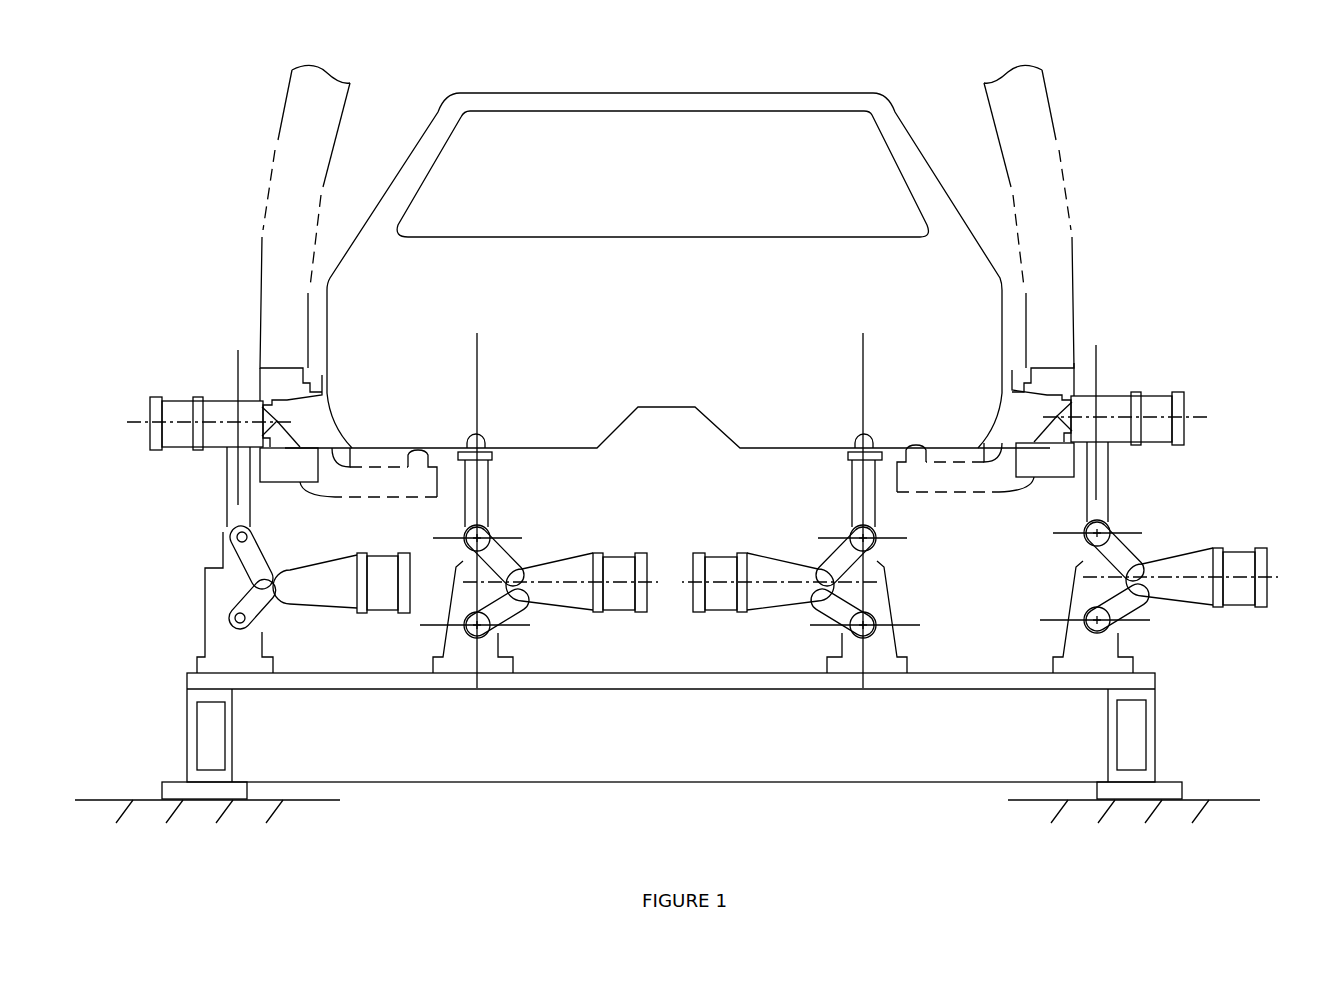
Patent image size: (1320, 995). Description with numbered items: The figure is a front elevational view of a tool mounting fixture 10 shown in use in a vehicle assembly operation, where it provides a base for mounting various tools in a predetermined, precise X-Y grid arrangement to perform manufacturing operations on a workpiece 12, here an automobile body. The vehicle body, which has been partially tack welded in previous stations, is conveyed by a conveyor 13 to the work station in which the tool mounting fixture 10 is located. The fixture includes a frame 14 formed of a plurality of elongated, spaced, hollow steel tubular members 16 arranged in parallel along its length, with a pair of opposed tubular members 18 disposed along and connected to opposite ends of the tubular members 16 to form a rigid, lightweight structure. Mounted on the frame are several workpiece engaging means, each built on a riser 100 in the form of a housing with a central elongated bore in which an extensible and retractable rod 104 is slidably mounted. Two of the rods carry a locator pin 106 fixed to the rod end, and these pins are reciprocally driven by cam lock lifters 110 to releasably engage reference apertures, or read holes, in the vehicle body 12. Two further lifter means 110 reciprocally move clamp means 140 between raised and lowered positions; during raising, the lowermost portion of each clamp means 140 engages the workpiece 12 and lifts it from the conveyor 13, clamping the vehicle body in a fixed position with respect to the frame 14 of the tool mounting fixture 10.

The tool mounting fixture 10 is at (678, 575).
The workpiece 12 is at (420, 268).
The conveyor 13 is at (305, 140).
The frame 14 is at (667, 751).
The tubular members 16 is at (212, 710).
The opposed tubular members 18 is at (597, 748).
The riser 100 is at (217, 597).
The rod 104 is at (228, 495).
The locator pin 106 is at (483, 435).
The cam lock lifter 110 is at (385, 553).
The clamp means 140 is at (223, 378).